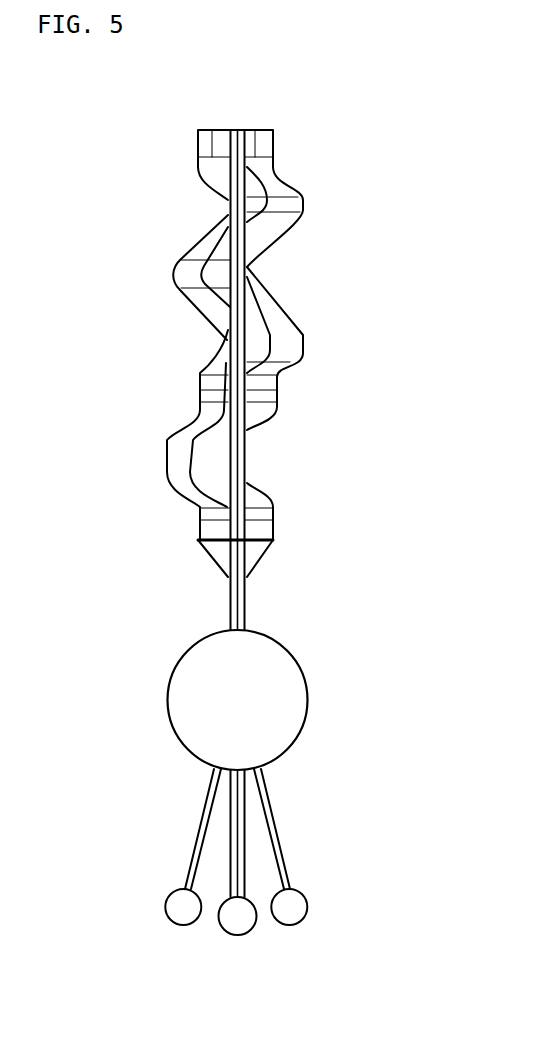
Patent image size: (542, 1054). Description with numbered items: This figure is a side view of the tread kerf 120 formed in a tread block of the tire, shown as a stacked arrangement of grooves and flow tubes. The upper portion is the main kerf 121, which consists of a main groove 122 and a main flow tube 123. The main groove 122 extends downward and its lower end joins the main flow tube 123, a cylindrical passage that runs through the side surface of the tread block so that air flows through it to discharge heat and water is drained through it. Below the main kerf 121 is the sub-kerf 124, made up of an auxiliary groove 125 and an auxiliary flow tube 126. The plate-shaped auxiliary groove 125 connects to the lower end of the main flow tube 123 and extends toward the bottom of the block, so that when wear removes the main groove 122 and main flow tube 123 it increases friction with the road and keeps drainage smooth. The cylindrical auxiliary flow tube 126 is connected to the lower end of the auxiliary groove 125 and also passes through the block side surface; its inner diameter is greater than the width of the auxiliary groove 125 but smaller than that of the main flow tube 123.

The tread kerf 120 is at (252, 83).
The main kerf 121 is at (88, 230).
The main groove 122 is at (193, 243).
The main flow tube 123 is at (197, 675).
The sub-kerf 124 is at (88, 826).
The auxiliary groove 125 is at (193, 833).
The auxiliary flow tube 126 is at (180, 903).